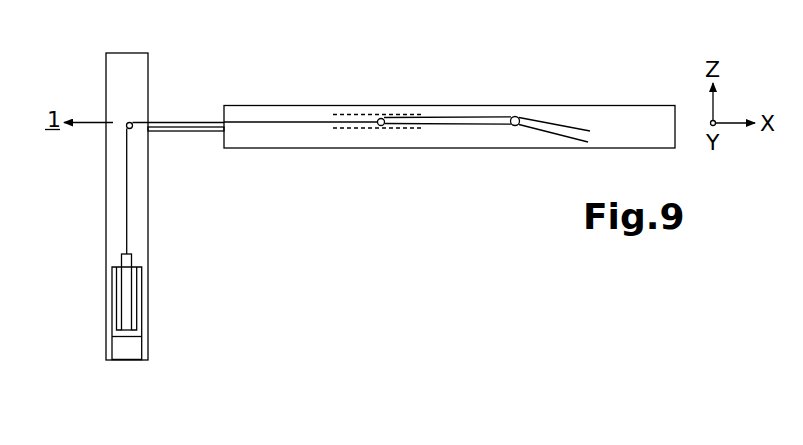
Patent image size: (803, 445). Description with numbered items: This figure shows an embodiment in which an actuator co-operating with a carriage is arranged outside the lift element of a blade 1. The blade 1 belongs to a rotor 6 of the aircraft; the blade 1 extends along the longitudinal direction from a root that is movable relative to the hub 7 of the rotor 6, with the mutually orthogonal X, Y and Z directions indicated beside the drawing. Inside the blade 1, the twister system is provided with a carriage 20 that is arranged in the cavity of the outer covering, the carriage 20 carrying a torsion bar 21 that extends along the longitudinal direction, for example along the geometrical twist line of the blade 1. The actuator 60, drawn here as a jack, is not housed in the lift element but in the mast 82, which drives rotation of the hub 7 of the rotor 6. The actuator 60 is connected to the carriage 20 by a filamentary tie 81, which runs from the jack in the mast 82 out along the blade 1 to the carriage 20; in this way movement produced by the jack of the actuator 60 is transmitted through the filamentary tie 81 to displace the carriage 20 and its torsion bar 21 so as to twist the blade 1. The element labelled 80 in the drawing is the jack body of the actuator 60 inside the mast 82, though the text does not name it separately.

The blade 1 is at (268, 148).
The rotor 6 is at (217, 85).
The hub 7 is at (175, 132).
The carriage 20 is at (472, 104).
The torsion bar 21 is at (448, 127).
The actuator 60 is at (106, 346).
The cylinder 80 is at (142, 297).
The filamentary tie 81 is at (163, 122).
The mast 82 is at (148, 219).